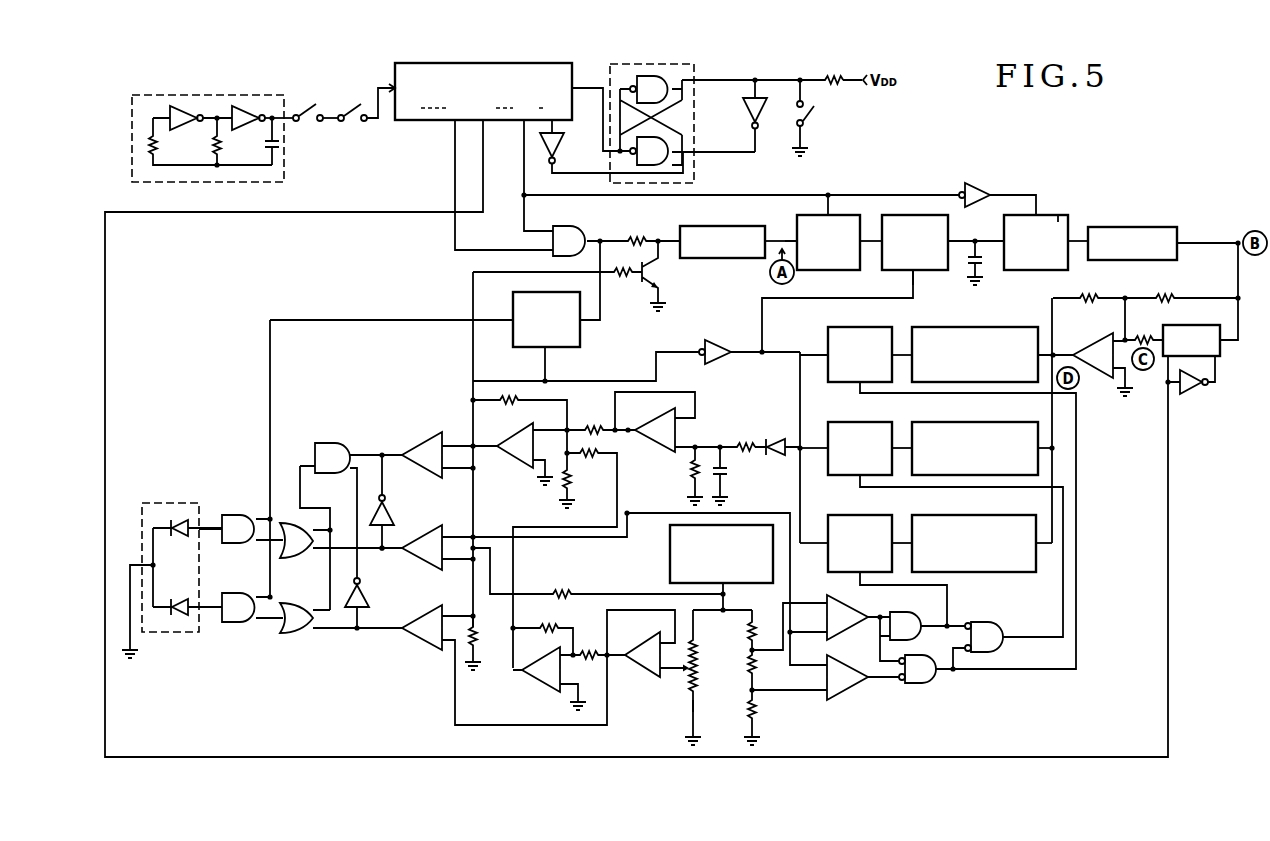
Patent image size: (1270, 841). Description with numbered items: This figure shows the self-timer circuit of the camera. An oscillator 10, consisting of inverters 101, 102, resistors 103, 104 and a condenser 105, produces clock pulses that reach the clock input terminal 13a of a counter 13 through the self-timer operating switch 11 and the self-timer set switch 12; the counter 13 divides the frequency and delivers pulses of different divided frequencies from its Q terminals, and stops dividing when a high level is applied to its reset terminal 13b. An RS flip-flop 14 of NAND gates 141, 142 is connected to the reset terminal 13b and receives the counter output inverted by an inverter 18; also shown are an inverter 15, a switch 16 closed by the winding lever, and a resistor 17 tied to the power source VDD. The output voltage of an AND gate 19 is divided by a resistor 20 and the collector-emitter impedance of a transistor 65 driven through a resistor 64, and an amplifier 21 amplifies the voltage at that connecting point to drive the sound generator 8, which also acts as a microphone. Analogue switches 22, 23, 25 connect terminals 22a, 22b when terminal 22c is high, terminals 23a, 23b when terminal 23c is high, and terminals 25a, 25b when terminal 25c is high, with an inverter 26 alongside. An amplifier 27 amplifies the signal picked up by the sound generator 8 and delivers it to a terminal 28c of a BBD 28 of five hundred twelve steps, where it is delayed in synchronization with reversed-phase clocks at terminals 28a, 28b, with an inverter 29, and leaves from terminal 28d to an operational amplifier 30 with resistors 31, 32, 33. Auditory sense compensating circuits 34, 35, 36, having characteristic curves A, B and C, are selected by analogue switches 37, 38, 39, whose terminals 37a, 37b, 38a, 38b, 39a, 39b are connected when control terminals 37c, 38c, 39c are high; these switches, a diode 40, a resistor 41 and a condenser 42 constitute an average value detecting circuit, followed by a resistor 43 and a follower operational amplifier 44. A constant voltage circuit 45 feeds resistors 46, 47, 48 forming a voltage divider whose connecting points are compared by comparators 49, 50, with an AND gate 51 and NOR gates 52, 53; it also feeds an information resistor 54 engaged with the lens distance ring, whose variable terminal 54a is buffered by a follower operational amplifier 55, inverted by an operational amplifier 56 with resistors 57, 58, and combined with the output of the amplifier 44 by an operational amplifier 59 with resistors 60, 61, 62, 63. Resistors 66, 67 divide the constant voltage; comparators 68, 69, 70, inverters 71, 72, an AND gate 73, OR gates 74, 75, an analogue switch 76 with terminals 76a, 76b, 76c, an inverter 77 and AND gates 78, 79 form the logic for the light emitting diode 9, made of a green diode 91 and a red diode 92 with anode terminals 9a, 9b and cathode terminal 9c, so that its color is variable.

The sound generator 8 is at (987, 266).
The light emitting diode 9 is at (145, 504).
The anode terminal 9a is at (198, 610).
The anode terminal 9b is at (190, 524).
The cathode terminal 9c is at (141, 642).
The oscillator 10 is at (273, 95).
The self-timer operating switch 11 is at (308, 111).
The self-timer set switch 12 is at (350, 111).
The counter 13 is at (474, 63).
The clock input terminal 13a is at (389, 100).
The reset terminal 13b is at (579, 82).
The RS flip-flop 14 is at (694, 68).
The inverter 15 is at (761, 123).
The switch 16 is at (811, 112).
The resistor 17 is at (834, 77).
The inverter 18 is at (564, 148).
The AND gate 19 is at (584, 233).
The resistor 20 is at (628, 238).
The amplifier 21 is at (733, 258).
The analogue switch 22 is at (831, 270).
The analogue switch terminal 22a is at (797, 237).
The analogue switch terminal 22b is at (860, 226).
The analogue switch control terminal 22c is at (827, 195).
The analogue switch 23 is at (933, 270).
The analogue switch terminal 23a is at (885, 226).
The analogue switch terminal 23b is at (952, 239).
The analogue switch control terminal 23c is at (913, 276).
The analogue switch 25 is at (1035, 270).
The analogue switch terminal 25a is at (1008, 216).
The analogue switch terminal 25b is at (1076, 240).
The analogue switch control terminal 25c is at (1050, 213).
The inverter 26 is at (978, 182).
The amplifier 27 is at (1132, 227).
The BBD 28 is at (1216, 324).
The clock terminal 28a is at (1166, 382).
The clock terminal 28b is at (1223, 359).
The BBD output terminal 28c is at (1229, 340).
The output terminal 28d is at (1164, 334).
The inverter 29 is at (1188, 391).
The operational amplifier 30 is at (1089, 335).
The resistor 31 is at (1174, 298).
The resistor 32 is at (1143, 334).
The resistor 33 is at (1077, 296).
The auditory sense compensating circuit A 34 is at (983, 325).
The auditory sense compensating circuit B 35 is at (985, 420).
The auditory sense compensating circuit C 36 is at (985, 513).
The analogue switch 37 is at (866, 325).
The analogue switch terminal 37a is at (896, 348).
The analogue switch terminal 37b is at (824, 337).
The analogue switch control terminal 37c is at (856, 390).
The analogue switch 38 is at (846, 420).
The analogue switch terminal 38a is at (898, 438).
The analogue switch terminal 38b is at (829, 456).
The analogue switch control terminal 38c is at (862, 482).
The analogue switch 39 is at (828, 530).
The analogue switch terminal 39a is at (892, 537).
The analogue switch terminal 39b is at (828, 543).
The analogue switch control terminal 39c is at (860, 584).
The diode 40 is at (775, 439).
The resistor 41 is at (744, 441).
The condenser 42 is at (722, 477).
The resistor 43 is at (692, 480).
The operational amplifier 44 is at (657, 413).
The constant voltage circuit 45 is at (670, 552).
The resistor 46 is at (748, 633).
The resistor 47 is at (759, 669).
The resistor 48 is at (759, 708).
The comparator 49 is at (847, 634).
The comparator 50 is at (853, 689).
The AND gate 51 is at (907, 608).
The NOR gate 52 is at (918, 686).
The NOR gate 53 is at (984, 620).
The information resistor 54 is at (702, 680).
The variable terminal 54a is at (688, 679).
The operational amplifier 55 is at (636, 672).
The operational amplifier 56 is at (532, 682).
The resistor 57 is at (590, 648).
The resistor 58 is at (536, 627).
The operational amplifier 59 is at (504, 464).
The resistor 60 is at (596, 458).
The resistor 61 is at (590, 426).
The resistor 62 is at (574, 488).
The resistor 63 is at (501, 403).
The resistor 64 is at (619, 278).
The transistor 65 is at (688, 273).
The resistor 66 is at (554, 592).
The resistor 67 is at (479, 636).
The comparator 68 is at (425, 436).
The comparator 69 is at (432, 525).
The comparator 70 is at (432, 605).
The inverter 71 is at (388, 512).
The inverter 72 is at (370, 593).
The AND gate 73 is at (341, 439).
The OR gate 74 is at (292, 522).
The OR gate 75 is at (285, 609).
The analogue switch 76 is at (513, 300).
The analogue switch terminal 76a is at (512, 331).
The analogue switch terminal 76b is at (582, 329).
The analogue switch control terminal 76c is at (546, 362).
The inverter 77 is at (720, 362).
The AND gate 78 is at (244, 514).
The AND gate 79 is at (244, 592).
The green light emitting diode 91 is at (180, 604).
The red light emitting diode 92 is at (180, 541).
The inverter 101 is at (177, 106).
The inverter 102 is at (239, 106).
The resistor 103 is at (162, 146).
The resistor 104 is at (225, 146).
The condenser 105 is at (279, 143).
The NAND gate 141 is at (686, 86).
The NAND gate 142 is at (686, 132).